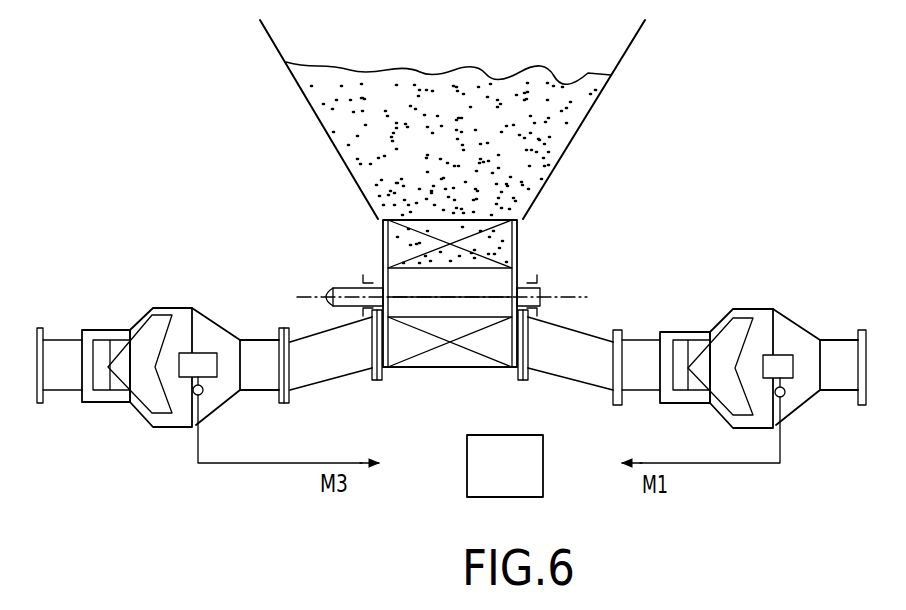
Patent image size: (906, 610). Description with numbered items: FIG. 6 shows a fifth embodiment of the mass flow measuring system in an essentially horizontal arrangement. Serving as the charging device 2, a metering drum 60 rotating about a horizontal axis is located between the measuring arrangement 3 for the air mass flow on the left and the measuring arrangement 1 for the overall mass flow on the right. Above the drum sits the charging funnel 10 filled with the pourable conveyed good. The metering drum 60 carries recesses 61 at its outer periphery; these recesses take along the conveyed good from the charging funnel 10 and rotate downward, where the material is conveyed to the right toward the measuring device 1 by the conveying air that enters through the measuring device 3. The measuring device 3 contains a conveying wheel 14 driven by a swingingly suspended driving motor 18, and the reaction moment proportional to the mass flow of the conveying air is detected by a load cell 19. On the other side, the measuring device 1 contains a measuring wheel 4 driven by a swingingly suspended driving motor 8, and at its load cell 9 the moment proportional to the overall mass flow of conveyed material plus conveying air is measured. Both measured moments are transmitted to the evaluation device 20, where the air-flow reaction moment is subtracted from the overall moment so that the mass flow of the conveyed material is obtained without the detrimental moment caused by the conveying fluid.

The measuring arrangement 1 is at (739, 354).
The charging device 2 is at (447, 318).
The measuring arrangement 3 is at (163, 364).
The measuring wheel 4 is at (730, 333).
The driving motor 8 is at (782, 355).
The load cell 9 is at (786, 398).
The charging funnel 10 is at (534, 205).
The conveying wheel 14 is at (147, 325).
The driving motor 18 is at (208, 353).
The load cell 19 is at (194, 394).
The evaluation device 20 is at (467, 490).
The metering drum 60 is at (388, 281).
The recesses 61 is at (427, 355).